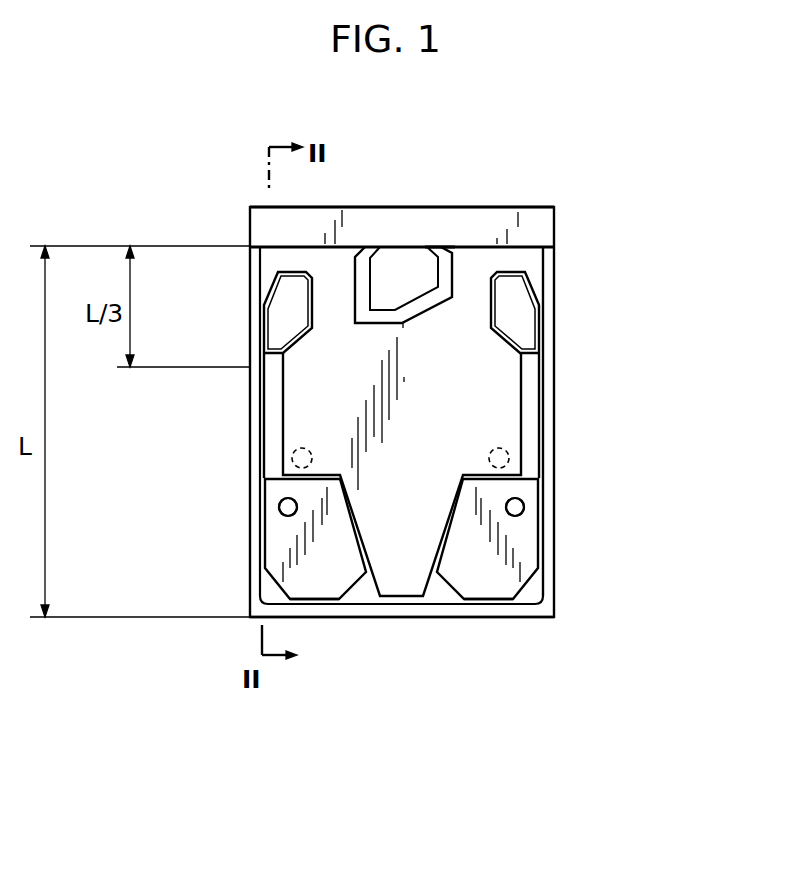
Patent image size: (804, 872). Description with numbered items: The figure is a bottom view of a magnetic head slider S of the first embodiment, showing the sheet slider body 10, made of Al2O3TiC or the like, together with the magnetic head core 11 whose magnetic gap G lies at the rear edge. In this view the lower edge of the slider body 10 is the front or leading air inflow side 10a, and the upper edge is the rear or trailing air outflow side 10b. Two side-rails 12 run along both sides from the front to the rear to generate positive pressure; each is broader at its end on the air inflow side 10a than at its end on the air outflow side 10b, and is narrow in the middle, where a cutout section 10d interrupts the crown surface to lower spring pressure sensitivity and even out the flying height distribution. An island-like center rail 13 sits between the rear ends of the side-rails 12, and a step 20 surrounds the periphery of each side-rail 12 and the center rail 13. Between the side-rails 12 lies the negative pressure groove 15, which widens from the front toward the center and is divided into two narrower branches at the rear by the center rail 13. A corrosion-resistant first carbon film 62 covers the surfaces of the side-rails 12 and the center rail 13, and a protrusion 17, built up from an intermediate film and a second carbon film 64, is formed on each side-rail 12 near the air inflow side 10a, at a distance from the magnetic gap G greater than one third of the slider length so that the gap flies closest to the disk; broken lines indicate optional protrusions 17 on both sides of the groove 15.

The magnetic head slider S is at (590, 255).
The slider body 10 is at (560, 312).
The air inflow side 10a is at (396, 630).
The air outflow side 10b is at (368, 190).
The cutout section 10d is at (530, 405).
The magnetic head core 11 is at (240, 225).
The side-rail 12 is at (320, 610).
The center rail 13 is at (437, 237).
The negative pressure groove 15 is at (463, 372).
The protrusion 17 is at (292, 455).
The step 20 is at (443, 278).
The first carbon film 62 is at (278, 557).
The second carbon film 64 is at (284, 500).
The magnetic gap G is at (533, 243).